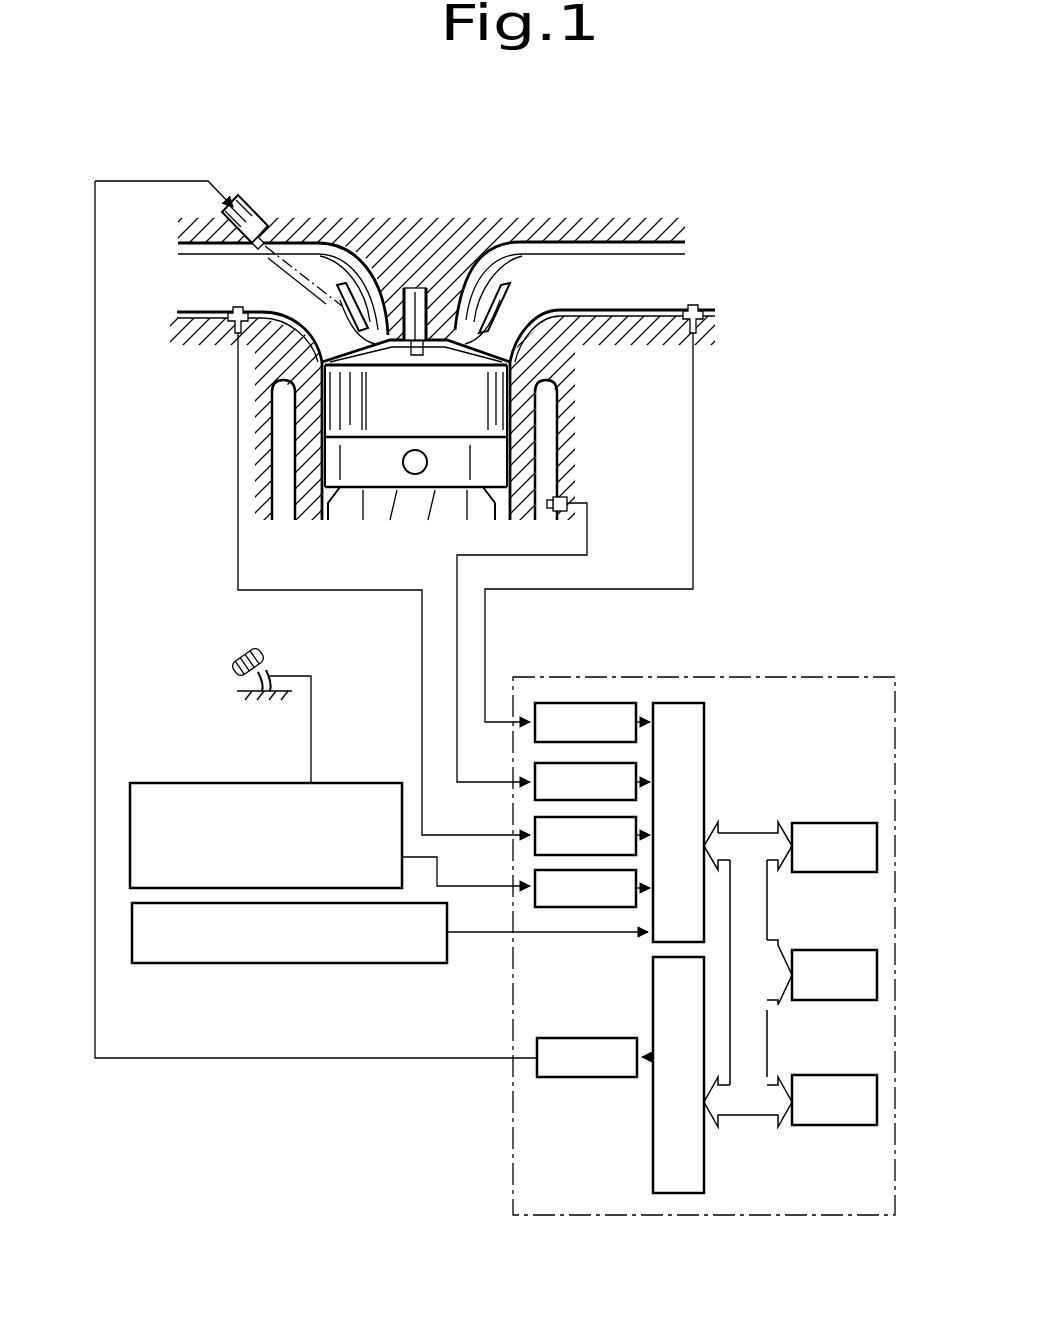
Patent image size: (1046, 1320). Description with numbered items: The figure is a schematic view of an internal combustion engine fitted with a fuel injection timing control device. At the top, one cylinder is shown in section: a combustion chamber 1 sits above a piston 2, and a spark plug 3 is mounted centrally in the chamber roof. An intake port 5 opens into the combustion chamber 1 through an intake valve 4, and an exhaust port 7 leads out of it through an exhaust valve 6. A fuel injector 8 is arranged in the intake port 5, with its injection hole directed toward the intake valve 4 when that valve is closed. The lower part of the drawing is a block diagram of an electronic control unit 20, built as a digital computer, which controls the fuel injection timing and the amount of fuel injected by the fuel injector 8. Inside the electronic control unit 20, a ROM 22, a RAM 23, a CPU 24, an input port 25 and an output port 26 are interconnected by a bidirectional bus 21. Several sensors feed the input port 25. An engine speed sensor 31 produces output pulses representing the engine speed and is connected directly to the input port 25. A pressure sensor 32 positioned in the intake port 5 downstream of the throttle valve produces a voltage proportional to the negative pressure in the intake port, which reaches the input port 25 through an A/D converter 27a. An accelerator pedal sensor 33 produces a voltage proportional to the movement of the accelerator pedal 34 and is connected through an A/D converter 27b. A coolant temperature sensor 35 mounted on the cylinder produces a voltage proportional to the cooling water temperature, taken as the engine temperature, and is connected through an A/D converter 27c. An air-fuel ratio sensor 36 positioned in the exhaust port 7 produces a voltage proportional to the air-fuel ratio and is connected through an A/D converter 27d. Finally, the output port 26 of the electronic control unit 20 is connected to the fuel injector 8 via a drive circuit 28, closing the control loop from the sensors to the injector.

The combustion chamber 1 is at (470, 390).
The piston 2 is at (477, 457).
The spark plug 3 is at (411, 290).
The intake valve 4 is at (374, 300).
The intake port 5 is at (316, 258).
The exhaust valve 6 is at (484, 322).
The exhaust port 7 is at (612, 258).
The fuel injector 8 is at (249, 196).
The electronic control unit 20 is at (888, 678).
The bidirectional bus 21 is at (750, 828).
The ROM 22 is at (854, 823).
The RAM 23 is at (858, 950).
The CPU 24 is at (858, 1075).
The input port 25 is at (706, 716).
The output port 26 is at (706, 1184).
The A/D converter 27a is at (535, 826).
The A/D converter 27b is at (535, 878).
The A/D converter 27c is at (535, 768).
The A/D converter 27d is at (572, 703).
The drive circuit 28 is at (537, 1068).
The engine speed sensor 31 is at (160, 964).
The pressure sensor 32 is at (234, 336).
The accelerator pedal sensor 33 is at (160, 783).
The accelerator pedal 34 is at (262, 648).
The coolant temperature sensor 35 is at (572, 494).
The air-fuel ratio sensor 36 is at (699, 336).